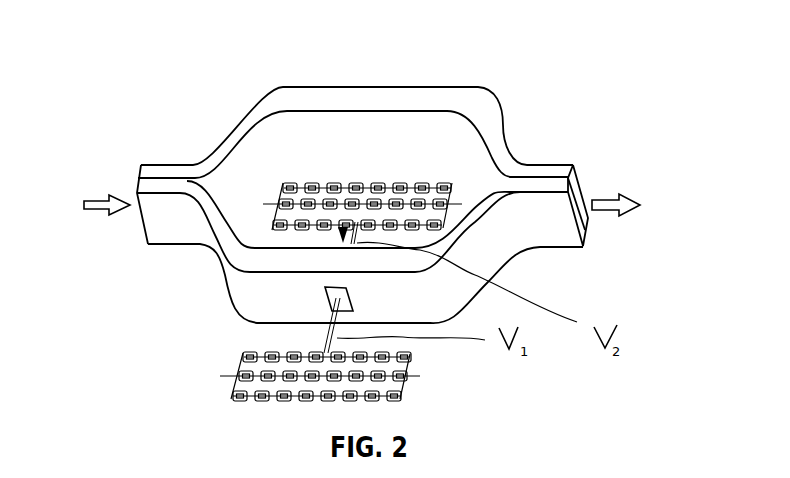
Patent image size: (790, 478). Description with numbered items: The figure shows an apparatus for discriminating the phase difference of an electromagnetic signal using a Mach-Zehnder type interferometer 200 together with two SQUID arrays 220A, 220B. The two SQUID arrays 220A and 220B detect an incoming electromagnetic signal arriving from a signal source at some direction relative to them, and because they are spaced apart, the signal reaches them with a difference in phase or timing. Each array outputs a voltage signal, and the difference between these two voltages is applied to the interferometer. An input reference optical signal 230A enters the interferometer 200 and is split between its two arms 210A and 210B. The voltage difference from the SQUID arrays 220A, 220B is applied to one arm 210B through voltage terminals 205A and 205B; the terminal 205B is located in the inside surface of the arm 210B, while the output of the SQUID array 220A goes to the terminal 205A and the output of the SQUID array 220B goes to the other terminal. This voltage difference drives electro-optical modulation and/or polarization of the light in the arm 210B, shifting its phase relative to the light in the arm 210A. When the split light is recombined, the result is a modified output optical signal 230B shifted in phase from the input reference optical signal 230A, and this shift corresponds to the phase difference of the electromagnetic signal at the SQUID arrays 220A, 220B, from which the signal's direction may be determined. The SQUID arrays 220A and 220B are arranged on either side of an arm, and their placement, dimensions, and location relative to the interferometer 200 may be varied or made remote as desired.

The Mach-Zehnder type interferometer 200 is at (485, 85).
The voltage terminal 205A is at (327, 300).
The voltage terminal 205B is at (232, 222).
The arm 210A is at (307, 92).
The arm 210B is at (230, 230).
The SQUID array 220A is at (410, 385).
The SQUID array 220B is at (502, 262).
The input reference optical signal 230A is at (100, 202).
The modified output optical signal 230B is at (608, 200).